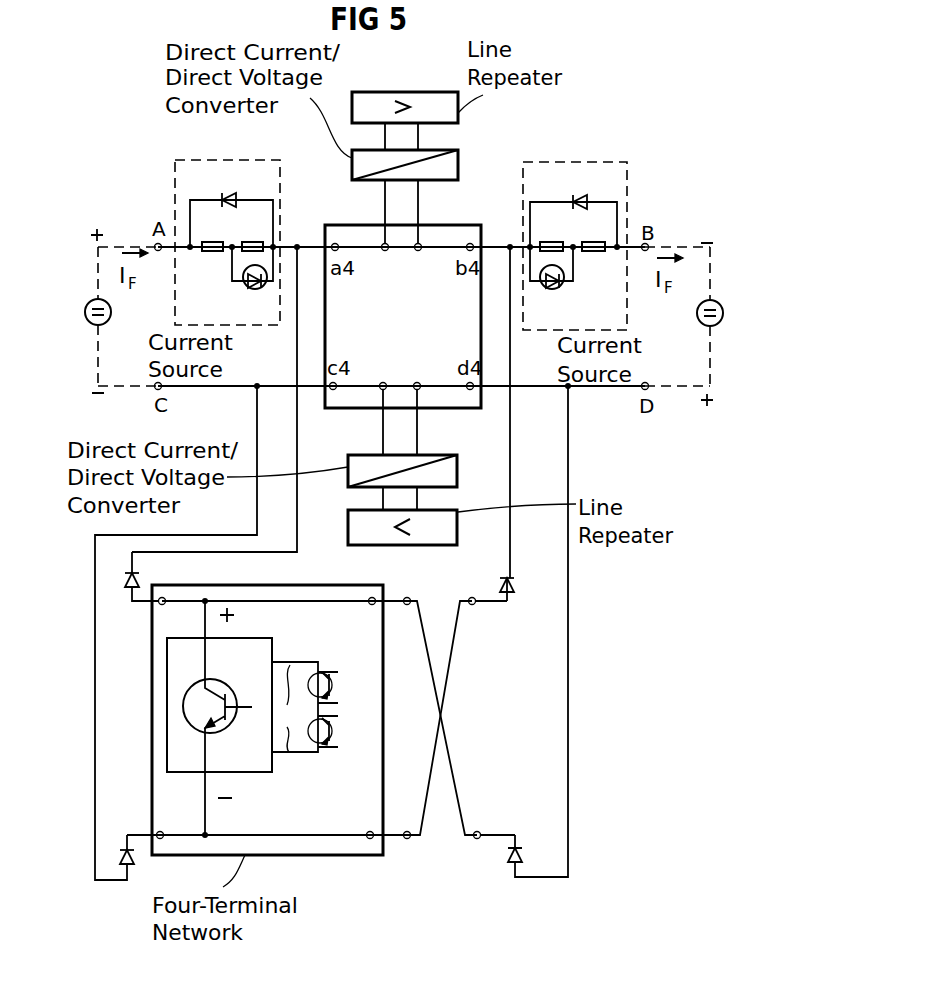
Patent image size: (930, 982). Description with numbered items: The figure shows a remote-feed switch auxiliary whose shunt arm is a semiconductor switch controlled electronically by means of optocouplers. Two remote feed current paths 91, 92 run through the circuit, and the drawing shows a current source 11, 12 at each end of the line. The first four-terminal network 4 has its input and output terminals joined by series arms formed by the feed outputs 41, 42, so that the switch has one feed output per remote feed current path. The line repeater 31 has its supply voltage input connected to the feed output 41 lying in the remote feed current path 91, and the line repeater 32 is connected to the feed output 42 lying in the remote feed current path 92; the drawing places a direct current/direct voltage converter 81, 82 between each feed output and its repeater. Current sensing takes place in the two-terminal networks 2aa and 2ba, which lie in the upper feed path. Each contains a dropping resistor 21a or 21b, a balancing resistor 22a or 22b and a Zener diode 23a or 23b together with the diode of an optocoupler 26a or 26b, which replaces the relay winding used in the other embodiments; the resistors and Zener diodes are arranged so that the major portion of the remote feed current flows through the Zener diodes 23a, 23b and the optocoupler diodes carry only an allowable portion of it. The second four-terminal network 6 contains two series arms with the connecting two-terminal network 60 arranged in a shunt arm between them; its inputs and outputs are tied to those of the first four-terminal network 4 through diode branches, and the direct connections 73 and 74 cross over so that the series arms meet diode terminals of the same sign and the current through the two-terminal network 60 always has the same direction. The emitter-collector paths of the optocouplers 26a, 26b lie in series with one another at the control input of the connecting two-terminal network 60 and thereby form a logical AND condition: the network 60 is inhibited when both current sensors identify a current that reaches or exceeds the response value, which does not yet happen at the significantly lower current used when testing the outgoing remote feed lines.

The two-terminal network 2aa is at (178, 182).
The two-terminal network 2ba is at (628, 168).
The dropping resistor 21a is at (209, 234).
The balancing resistor 22a is at (256, 234).
The Zener diode 23a is at (232, 195).
The optocoupler 26a is at (253, 288).
The dropping resistor 21b is at (597, 234).
The balancing resistor 22b is at (549, 234).
The Zener diode 23b is at (588, 198).
The optocoupler 26b is at (552, 290).
The remote feed current path 91 is at (307, 243).
The remote feed current path 92 is at (312, 397).
The first four-terminal network 4 is at (445, 234).
The feed output 41 is at (402, 193).
The feed output 42 is at (400, 438).
The line repeater 31 is at (405, 95).
The line repeater 32 is at (415, 527).
The direct current/direct voltage converter 81 is at (455, 165).
The direct current/direct voltage converter 82 is at (452, 478).
The current source 11 is at (145, 356).
The current source 12 is at (638, 363).
The second four-terminal network 6 is at (327, 855).
The connecting two-terminal network 60 is at (235, 660).
The direct connection 73 is at (423, 628).
The direct connection 74 is at (423, 817).